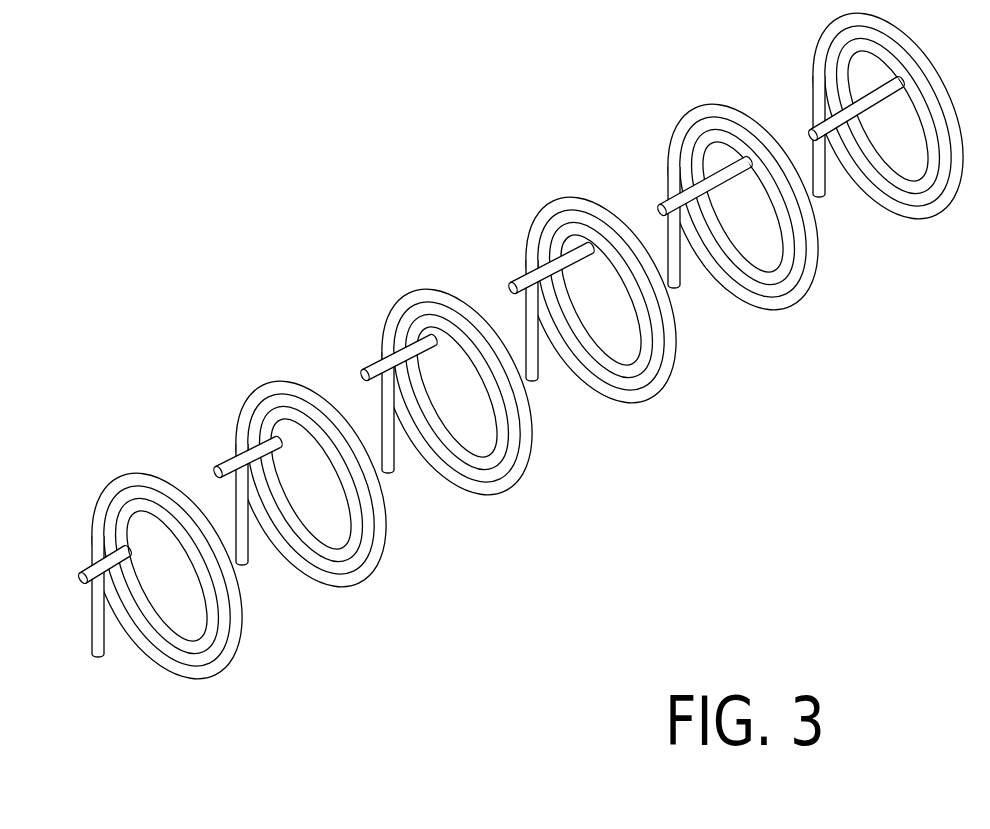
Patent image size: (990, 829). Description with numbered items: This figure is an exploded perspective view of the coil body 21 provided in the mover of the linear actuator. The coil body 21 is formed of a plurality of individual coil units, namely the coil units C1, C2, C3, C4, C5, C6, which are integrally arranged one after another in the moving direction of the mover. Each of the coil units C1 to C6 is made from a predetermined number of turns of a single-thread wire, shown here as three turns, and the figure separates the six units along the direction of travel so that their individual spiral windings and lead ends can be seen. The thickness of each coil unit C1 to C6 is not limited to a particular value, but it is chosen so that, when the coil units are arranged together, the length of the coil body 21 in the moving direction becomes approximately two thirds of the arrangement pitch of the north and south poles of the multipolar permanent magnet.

The coil body 21 is at (422, 201).
The coil unit C1 is at (175, 663).
The coil unit C2 is at (310, 565).
The coil unit C3 is at (457, 475).
The coil unit C4 is at (605, 387).
The coil unit C5 is at (753, 298).
The coil unit C6 is at (900, 208).